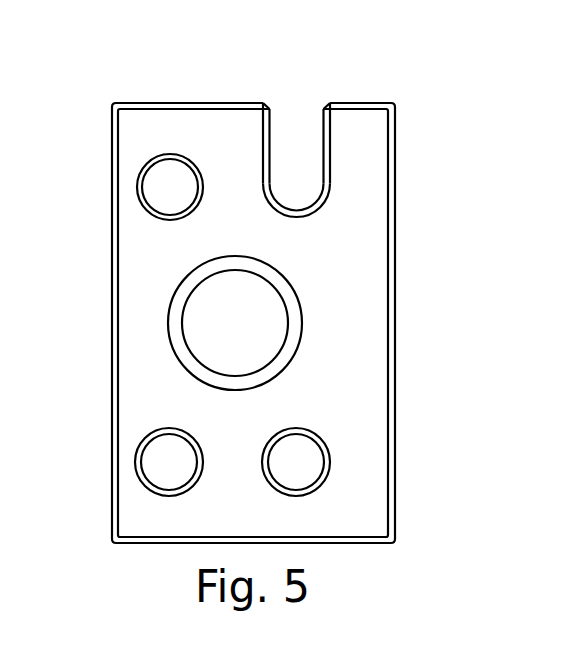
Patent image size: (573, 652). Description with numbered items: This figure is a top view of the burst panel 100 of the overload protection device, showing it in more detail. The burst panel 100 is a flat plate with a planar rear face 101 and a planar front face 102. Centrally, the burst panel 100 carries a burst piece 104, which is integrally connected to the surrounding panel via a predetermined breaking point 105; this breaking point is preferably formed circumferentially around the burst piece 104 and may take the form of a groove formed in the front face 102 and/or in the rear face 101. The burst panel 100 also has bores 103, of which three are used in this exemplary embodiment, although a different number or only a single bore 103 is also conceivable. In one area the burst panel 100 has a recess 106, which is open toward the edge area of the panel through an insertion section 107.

The burst panel 100 is at (403, 322).
The planar rear face 101 is at (375, 249).
The planar front face 102 is at (395, 143).
The bores 103 is at (143, 180).
The burst piece 104 is at (203, 333).
The predetermined breaking point 105 is at (178, 308).
The recess 106 is at (310, 193).
The insertion section 107 is at (300, 103).